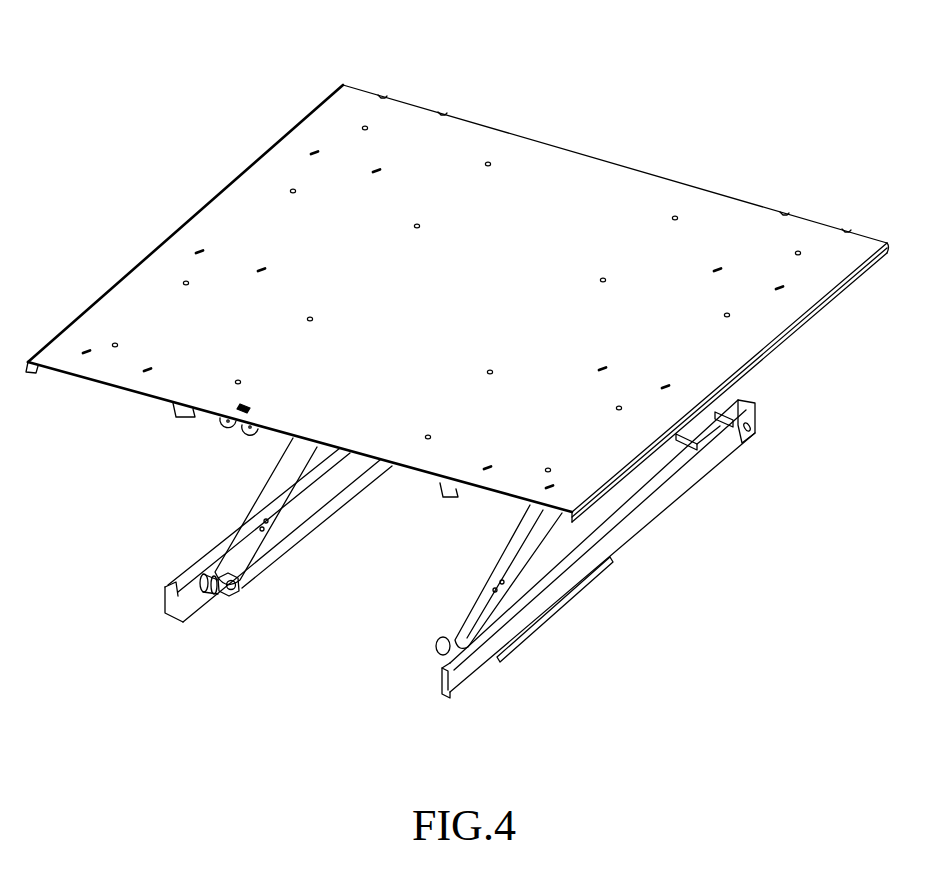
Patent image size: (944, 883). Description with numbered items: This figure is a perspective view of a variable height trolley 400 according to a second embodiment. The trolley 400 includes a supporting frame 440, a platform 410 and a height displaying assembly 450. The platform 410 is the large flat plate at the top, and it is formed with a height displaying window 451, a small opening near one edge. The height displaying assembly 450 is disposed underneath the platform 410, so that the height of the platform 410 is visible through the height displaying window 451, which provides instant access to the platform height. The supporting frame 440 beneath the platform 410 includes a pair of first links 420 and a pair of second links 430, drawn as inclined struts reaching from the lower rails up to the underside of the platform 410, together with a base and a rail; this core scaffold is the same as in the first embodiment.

The variable height trolley 400 is at (744, 143).
The platform 410 is at (588, 183).
The first links 420 is at (250, 537).
The second links 430 is at (487, 602).
The supporting frame 440 is at (570, 612).
The height displaying assembly 450 is at (230, 438).
The height displaying window 451 is at (241, 405).